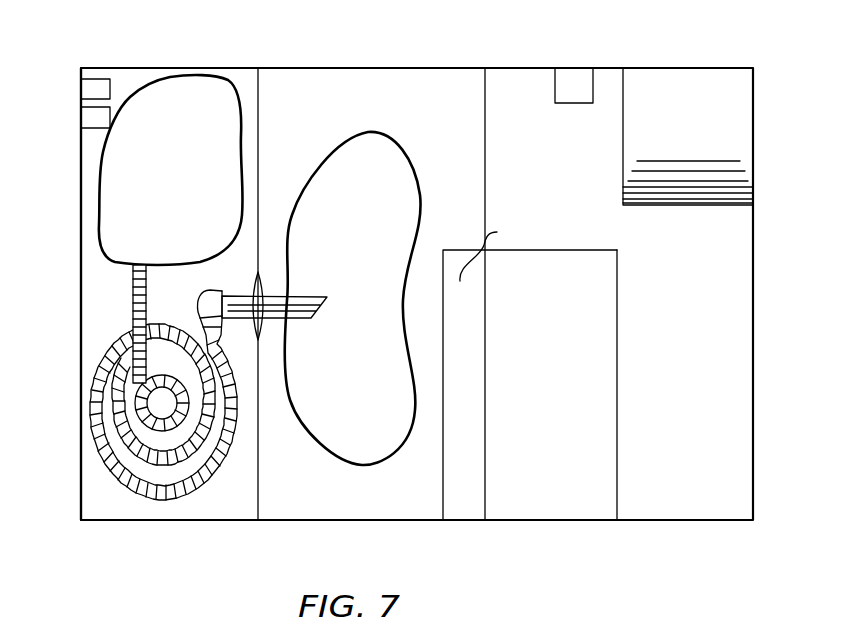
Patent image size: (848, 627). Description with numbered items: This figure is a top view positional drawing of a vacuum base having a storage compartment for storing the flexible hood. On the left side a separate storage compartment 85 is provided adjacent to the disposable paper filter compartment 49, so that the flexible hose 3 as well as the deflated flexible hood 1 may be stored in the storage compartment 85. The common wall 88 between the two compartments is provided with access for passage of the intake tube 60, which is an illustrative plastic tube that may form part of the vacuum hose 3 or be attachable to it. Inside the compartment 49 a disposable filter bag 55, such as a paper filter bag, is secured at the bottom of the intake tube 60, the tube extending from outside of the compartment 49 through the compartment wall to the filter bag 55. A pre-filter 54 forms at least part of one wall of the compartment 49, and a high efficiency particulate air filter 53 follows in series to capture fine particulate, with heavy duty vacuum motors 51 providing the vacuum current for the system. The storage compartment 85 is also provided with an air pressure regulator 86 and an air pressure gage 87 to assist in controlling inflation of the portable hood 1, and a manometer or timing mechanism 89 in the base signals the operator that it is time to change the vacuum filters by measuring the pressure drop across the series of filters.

The flexible hood 1 is at (172, 179).
The flexible vacuum hose 3 is at (164, 500).
The compartment 49 is at (440, 100).
The heavy duty vacuum motor 51 is at (735, 145).
The HEPA filter 53 is at (566, 496).
The pre-filter 54 is at (460, 496).
The disposable filter bag 55 is at (362, 456).
The intake tube 60 is at (300, 319).
The storage compartment 85 is at (110, 291).
The air pressure regulator 86 is at (97, 90).
The air pressure gage 87 is at (99, 116).
The common wall 88 is at (258, 94).
The manometer or timing mechanism 89 is at (568, 84).